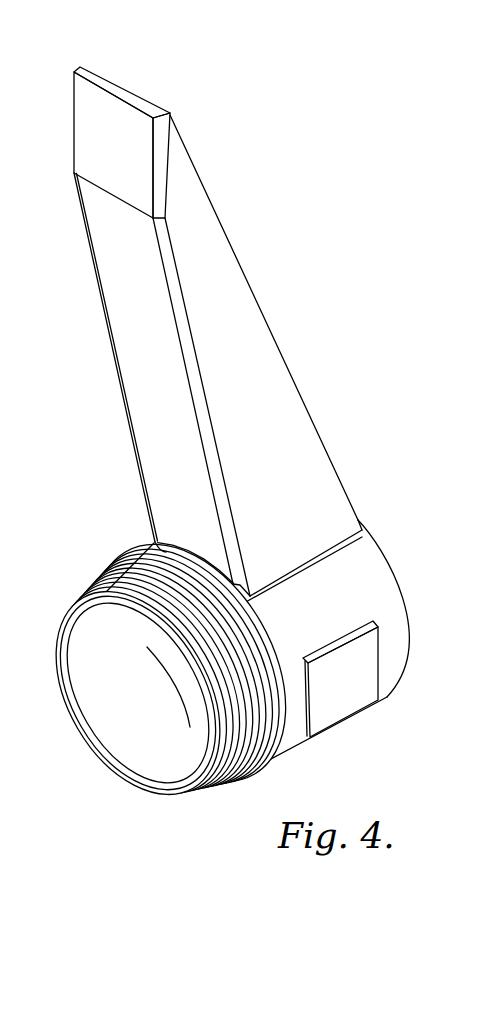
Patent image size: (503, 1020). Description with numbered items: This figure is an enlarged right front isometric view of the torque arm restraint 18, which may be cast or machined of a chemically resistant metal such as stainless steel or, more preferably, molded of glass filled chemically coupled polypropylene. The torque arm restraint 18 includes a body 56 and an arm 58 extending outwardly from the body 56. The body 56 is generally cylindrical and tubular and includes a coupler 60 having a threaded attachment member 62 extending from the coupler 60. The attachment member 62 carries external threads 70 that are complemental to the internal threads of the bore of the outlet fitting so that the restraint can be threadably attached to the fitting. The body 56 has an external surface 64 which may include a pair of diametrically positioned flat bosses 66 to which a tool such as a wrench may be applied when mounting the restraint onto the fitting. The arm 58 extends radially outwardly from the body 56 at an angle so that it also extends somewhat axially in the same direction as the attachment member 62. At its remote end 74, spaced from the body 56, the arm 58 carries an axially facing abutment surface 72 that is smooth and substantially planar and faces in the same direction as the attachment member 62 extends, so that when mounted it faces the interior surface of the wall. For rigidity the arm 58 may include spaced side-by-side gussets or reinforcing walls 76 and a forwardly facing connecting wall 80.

The torque arm restraint 18 is at (241, 465).
The body 56 is at (250, 687).
The arm 58 is at (181, 328).
The coupler 60 is at (292, 745).
The threaded attachment member 62 is at (200, 790).
The external surface 64 is at (363, 562).
The flat bosses 66 is at (367, 675).
The external threads 70 is at (193, 797).
The abutment surface 72 is at (110, 139).
The remote end 74 is at (168, 113).
The reinforcing wall 76 is at (248, 347).
The connecting wall 80 is at (143, 365).